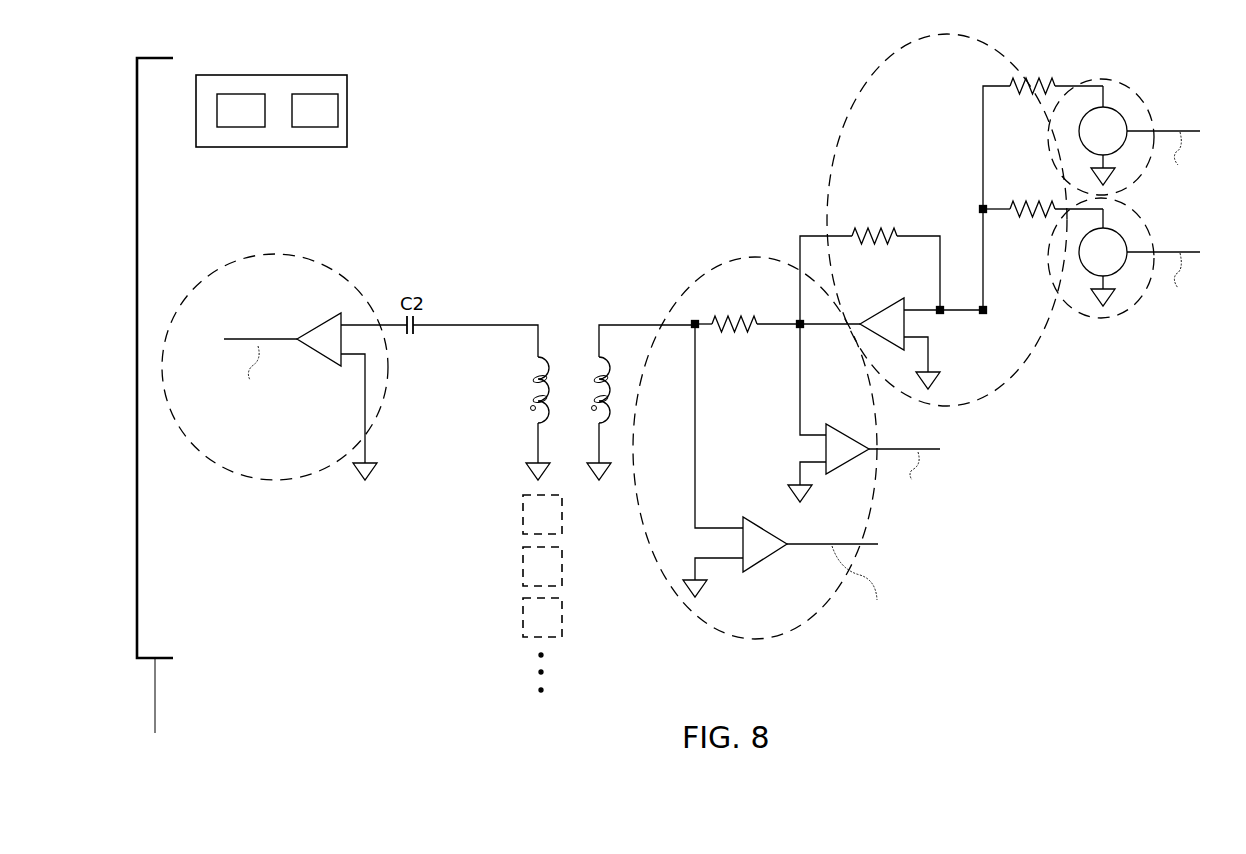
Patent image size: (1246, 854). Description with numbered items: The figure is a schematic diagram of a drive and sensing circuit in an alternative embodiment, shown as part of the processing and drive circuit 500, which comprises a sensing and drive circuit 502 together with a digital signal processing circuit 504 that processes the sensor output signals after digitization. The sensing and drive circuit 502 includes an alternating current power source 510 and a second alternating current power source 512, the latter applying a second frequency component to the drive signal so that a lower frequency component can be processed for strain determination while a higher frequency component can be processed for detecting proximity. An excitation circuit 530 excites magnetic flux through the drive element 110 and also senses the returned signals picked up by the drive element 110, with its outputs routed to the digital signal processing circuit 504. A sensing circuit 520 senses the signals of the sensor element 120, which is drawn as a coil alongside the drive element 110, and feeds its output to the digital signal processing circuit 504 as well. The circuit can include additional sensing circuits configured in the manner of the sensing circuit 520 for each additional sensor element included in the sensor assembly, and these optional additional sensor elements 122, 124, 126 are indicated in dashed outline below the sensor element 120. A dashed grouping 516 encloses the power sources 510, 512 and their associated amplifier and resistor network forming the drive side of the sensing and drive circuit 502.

The processing and drive circuit 500 is at (388, 111).
The sensing and drive circuit 502 is at (580, 143).
The digital signal processing circuit 504 is at (349, 111).
The alternating current power source 510 is at (1100, 72).
The second alternating current power source 512 is at (1100, 318).
The drive amplifier stage 516 is at (845, 103).
The sensing circuit 520 is at (305, 253).
The excitation circuit 530 is at (730, 258).
The drive element 110 is at (590, 393).
The sensor element 120 is at (530, 393).
The additional sensor element 122 is at (522, 514).
The additional sensor element 124 is at (522, 570).
The additional sensor element 126 is at (522, 623).